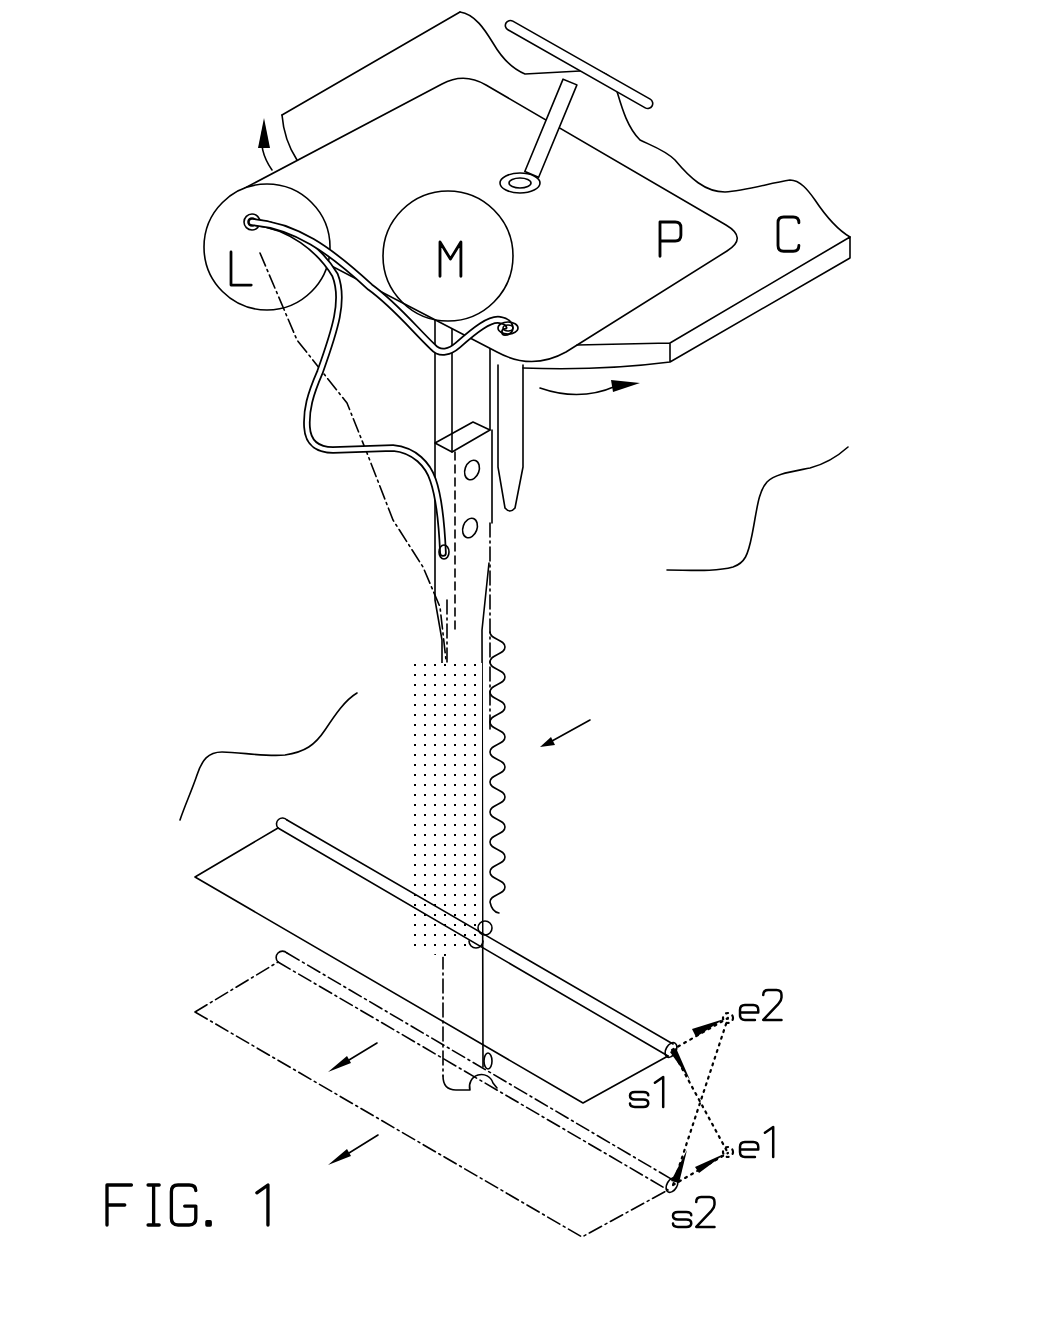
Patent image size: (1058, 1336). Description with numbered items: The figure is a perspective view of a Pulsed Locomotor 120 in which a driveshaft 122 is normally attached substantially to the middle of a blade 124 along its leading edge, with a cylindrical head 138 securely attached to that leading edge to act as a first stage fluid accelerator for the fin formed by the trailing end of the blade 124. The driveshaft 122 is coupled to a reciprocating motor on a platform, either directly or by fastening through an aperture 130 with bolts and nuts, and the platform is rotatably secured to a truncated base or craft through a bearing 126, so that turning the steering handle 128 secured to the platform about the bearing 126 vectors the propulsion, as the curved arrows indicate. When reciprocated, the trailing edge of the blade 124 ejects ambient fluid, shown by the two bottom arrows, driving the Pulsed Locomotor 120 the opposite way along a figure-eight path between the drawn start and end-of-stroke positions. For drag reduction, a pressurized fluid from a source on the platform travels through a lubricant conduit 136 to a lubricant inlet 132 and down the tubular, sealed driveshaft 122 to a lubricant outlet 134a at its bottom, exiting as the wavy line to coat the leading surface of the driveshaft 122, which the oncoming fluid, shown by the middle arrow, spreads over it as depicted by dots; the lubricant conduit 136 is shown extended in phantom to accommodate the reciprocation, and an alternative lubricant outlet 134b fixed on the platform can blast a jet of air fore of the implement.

The Pulsed Locomotor 120 is at (508, 316).
The driveshaft 122 is at (441, 671).
The blade 124 is at (370, 1032).
The bearing 126 is at (467, 159).
The steering handle 128 is at (618, 98).
The aperture 130 is at (523, 490).
The lubricant inlet 132 is at (377, 569).
The lubricant outlet 134a is at (559, 919).
The lubricant outlet 134b is at (575, 438).
The lubricant conduit 136 is at (351, 387).
The cylindrical head 138 is at (478, 981).